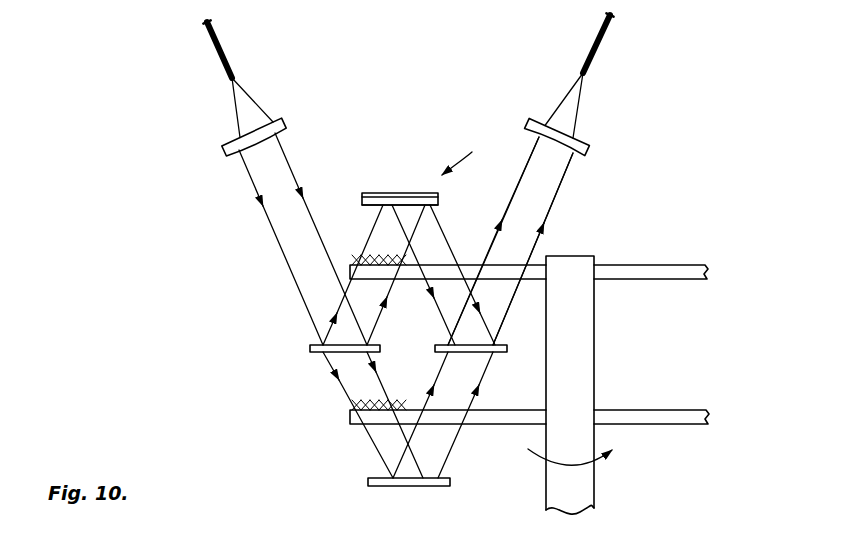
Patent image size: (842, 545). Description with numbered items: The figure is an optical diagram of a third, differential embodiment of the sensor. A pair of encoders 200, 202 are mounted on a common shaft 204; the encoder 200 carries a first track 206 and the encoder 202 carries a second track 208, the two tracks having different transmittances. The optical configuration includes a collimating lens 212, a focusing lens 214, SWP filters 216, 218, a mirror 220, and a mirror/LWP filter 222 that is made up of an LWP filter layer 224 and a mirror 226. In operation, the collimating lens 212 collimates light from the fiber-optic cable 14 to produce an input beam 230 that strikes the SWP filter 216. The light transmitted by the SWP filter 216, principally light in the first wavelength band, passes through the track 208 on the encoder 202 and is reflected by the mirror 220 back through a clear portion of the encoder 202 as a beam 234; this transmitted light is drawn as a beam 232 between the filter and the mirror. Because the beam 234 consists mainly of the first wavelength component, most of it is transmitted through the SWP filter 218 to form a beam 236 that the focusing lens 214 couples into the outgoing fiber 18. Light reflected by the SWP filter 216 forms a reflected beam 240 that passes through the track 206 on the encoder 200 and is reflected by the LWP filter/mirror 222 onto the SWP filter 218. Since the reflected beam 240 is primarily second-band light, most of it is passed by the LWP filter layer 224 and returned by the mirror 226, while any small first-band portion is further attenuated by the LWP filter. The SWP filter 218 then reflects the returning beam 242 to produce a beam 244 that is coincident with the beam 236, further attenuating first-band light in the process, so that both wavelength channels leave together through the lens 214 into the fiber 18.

The fiber-optic cable 14 is at (217, 53).
The outgoing fiber 18 is at (594, 58).
The encoder 200 is at (666, 268).
The encoder 202 is at (672, 413).
The common shaft 204 is at (552, 500).
The first track 206 is at (345, 256).
The second track 208 is at (345, 404).
The collimating lens 212 is at (226, 147).
The focusing lens 214 is at (592, 150).
The SWP filter 216 is at (318, 344).
The SWP filter 218 is at (495, 352).
The mirror 220 is at (367, 483).
The mirror/LWP filter 222 is at (474, 154).
The LWP filter layer 224 is at (362, 201).
The mirror 226 is at (440, 195).
The input beam 230 is at (253, 183).
The transmitted beam 232 is at (330, 367).
The beam 234 is at (452, 445).
The beam 236 is at (560, 191).
The reflected beam 240 is at (382, 322).
The beam 242 is at (443, 232).
The beam 244 is at (510, 241).